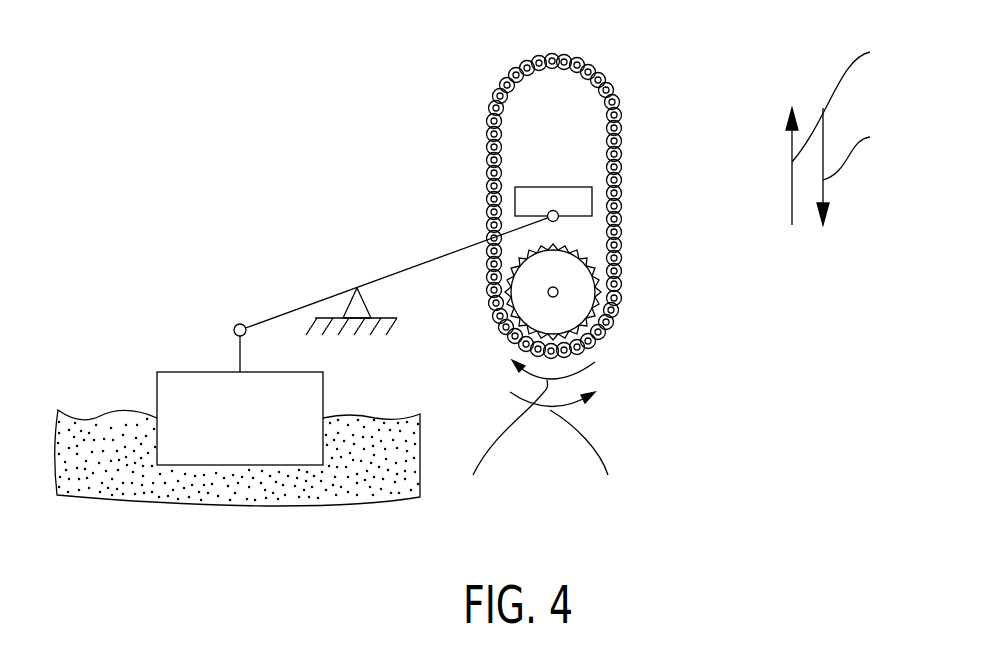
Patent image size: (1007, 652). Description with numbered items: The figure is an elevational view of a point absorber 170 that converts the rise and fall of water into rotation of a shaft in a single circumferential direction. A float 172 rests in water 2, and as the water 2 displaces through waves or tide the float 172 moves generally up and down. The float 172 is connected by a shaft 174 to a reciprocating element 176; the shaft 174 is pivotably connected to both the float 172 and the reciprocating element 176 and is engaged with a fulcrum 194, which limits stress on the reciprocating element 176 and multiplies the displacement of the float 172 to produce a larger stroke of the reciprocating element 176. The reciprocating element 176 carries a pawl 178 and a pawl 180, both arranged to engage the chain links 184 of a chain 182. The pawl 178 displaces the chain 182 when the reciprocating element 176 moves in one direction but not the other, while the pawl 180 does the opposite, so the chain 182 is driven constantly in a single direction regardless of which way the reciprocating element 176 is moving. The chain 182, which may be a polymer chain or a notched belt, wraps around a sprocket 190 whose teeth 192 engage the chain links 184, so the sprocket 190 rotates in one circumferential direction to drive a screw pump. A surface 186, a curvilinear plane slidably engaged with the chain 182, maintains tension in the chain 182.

The point absorber 170 is at (168, 131).
The water 2 is at (105, 412).
The float 172 is at (237, 467).
The shaft 174 is at (381, 278).
The reciprocating element 176 is at (588, 188).
The pawl 178 is at (493, 197).
The pawl 180 is at (603, 204).
The chain 182 is at (617, 118).
The chain links 184 is at (583, 187).
The surface 186 is at (596, 70).
The sprocket 190 is at (580, 308).
The teeth 192 is at (615, 268).
The fulcrum 194 is at (362, 297).